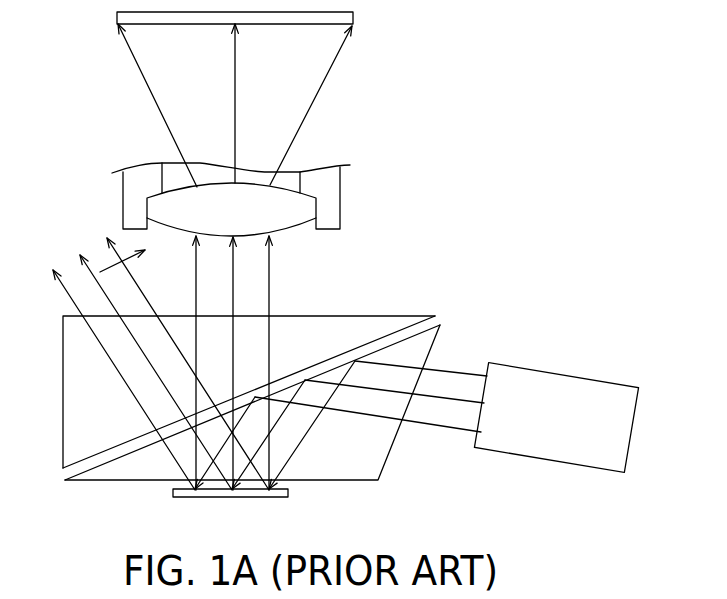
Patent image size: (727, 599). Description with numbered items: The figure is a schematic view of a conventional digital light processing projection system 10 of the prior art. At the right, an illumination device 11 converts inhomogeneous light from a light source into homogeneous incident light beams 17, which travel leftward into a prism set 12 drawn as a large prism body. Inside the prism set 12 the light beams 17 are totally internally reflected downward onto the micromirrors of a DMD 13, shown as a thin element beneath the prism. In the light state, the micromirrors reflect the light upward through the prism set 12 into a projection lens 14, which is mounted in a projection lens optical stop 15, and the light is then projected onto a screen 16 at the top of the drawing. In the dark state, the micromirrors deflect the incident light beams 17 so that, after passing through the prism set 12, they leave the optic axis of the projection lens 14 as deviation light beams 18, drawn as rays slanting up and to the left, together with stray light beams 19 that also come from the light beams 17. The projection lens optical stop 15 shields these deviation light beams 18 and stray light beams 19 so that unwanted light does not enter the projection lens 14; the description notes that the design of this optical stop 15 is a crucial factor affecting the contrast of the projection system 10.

The DLP projection system 10 is at (512, 142).
The illumination device 11 is at (583, 378).
The prism set 12 is at (392, 315).
The DMD 13 is at (288, 492).
The projection lens 14 is at (287, 188).
The projection lens optical stop 15 is at (340, 192).
The screen 16 is at (353, 18).
The incident light beams 17 is at (452, 370).
The deviation light beams 18 is at (107, 232).
The stray light beams 19 is at (138, 253).